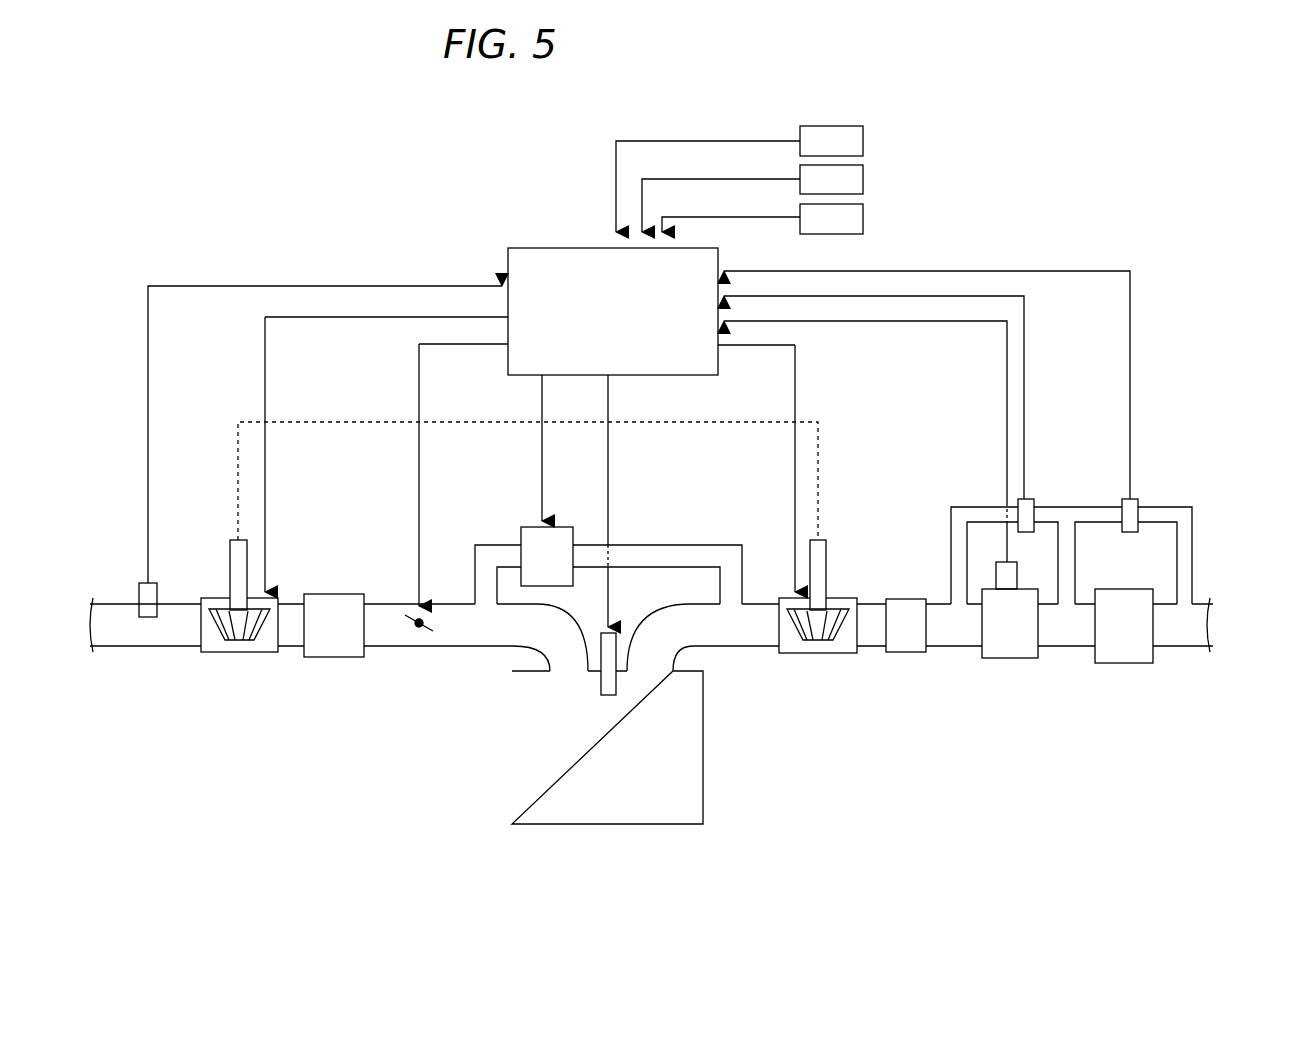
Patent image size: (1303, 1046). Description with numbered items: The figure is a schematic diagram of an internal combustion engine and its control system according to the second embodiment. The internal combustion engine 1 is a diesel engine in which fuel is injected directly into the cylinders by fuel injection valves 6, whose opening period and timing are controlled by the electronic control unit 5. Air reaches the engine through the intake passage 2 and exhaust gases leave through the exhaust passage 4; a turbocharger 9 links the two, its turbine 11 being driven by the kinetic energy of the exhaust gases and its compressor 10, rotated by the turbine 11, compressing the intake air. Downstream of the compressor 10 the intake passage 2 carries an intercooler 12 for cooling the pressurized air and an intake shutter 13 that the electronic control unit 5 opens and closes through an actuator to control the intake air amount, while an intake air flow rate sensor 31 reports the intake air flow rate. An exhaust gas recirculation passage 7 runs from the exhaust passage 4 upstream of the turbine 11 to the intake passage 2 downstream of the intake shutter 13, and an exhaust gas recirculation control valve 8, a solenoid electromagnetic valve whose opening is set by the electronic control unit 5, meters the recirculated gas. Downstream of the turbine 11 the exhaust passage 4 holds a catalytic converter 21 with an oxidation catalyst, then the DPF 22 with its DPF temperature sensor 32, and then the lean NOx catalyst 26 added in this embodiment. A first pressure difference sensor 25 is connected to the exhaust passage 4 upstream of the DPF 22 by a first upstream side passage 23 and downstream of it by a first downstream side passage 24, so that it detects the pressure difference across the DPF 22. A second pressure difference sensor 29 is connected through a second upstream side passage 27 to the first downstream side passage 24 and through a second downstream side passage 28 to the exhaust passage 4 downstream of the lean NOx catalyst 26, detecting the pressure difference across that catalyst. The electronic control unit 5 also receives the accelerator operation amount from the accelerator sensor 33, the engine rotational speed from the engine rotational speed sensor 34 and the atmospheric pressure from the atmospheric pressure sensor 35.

The internal combustion engine 1 is at (594, 826).
The intake passage 2 is at (385, 603).
The exhaust passage 4 is at (735, 648).
The electronic control unit 5 is at (525, 248).
The fuel injection valve 6 is at (614, 633).
The exhaust gas recirculation passage 7 is at (670, 545).
The exhaust gas recirculation control valve 8 is at (555, 527).
The turbocharger 9 is at (212, 557).
The compressor 10 is at (243, 653).
The turbine 11 is at (815, 653).
The intercooler 12 is at (331, 594).
The intake shutter 13 is at (419, 640).
The catalytic converter 21 is at (905, 652).
The DPF 22 is at (1005, 658).
The first upstream side passage 23 is at (951, 517).
The first downstream side passage 24 is at (1082, 550).
The first pressure difference sensor 25 is at (1032, 499).
The lean NOx catalyst 26 is at (1128, 663).
The second upstream side passage 27 is at (1092, 507).
The second downstream side passage 28 is at (1193, 550).
The second pressure difference sensor 29 is at (1137, 499).
The intake air flow rate sensor 31 is at (142, 583).
The DPF temperature sensor 32 is at (996, 575).
The accelerator sensor 33 is at (866, 138).
The engine rotational speed sensor 34 is at (866, 177).
The atmospheric pressure sensor 35 is at (866, 216).